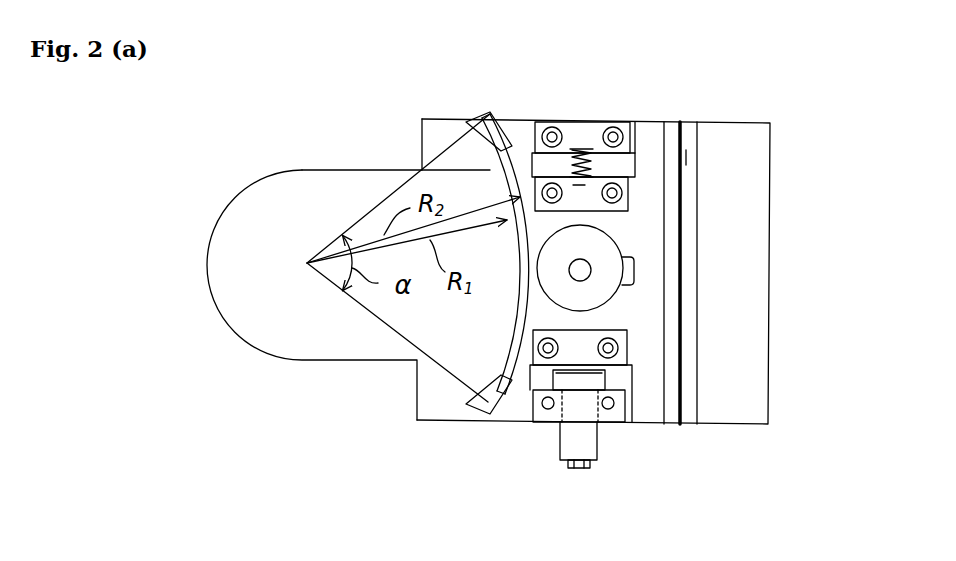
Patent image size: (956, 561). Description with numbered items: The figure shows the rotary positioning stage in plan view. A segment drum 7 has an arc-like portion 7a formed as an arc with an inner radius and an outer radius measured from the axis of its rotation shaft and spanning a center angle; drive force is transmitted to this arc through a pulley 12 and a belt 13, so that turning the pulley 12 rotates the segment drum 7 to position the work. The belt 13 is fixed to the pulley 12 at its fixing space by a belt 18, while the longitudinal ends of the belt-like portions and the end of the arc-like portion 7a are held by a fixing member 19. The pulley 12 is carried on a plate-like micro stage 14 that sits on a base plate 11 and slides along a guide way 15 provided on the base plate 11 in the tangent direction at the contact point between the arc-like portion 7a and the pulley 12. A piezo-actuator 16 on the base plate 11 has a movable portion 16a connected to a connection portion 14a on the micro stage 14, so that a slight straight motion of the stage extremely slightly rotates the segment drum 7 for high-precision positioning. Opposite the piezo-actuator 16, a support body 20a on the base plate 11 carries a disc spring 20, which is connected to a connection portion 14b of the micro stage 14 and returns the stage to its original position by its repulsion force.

The segment drum 7 is at (273, 228).
The arc-like portion 7a is at (488, 122).
The base plate 11 is at (745, 318).
The pulley 12 is at (580, 243).
The belt 13 is at (623, 247).
The micro stage 14 is at (647, 385).
The connection portion 14a is at (582, 352).
The connection portion 14b is at (688, 157).
The guide way 15 is at (689, 132).
The piezo-actuator 16 is at (585, 442).
The movable portion 16a is at (573, 380).
The belt 18 is at (634, 262).
The fixing member 19 is at (500, 124).
The disc spring 20 is at (577, 148).
The support body 20a is at (617, 152).